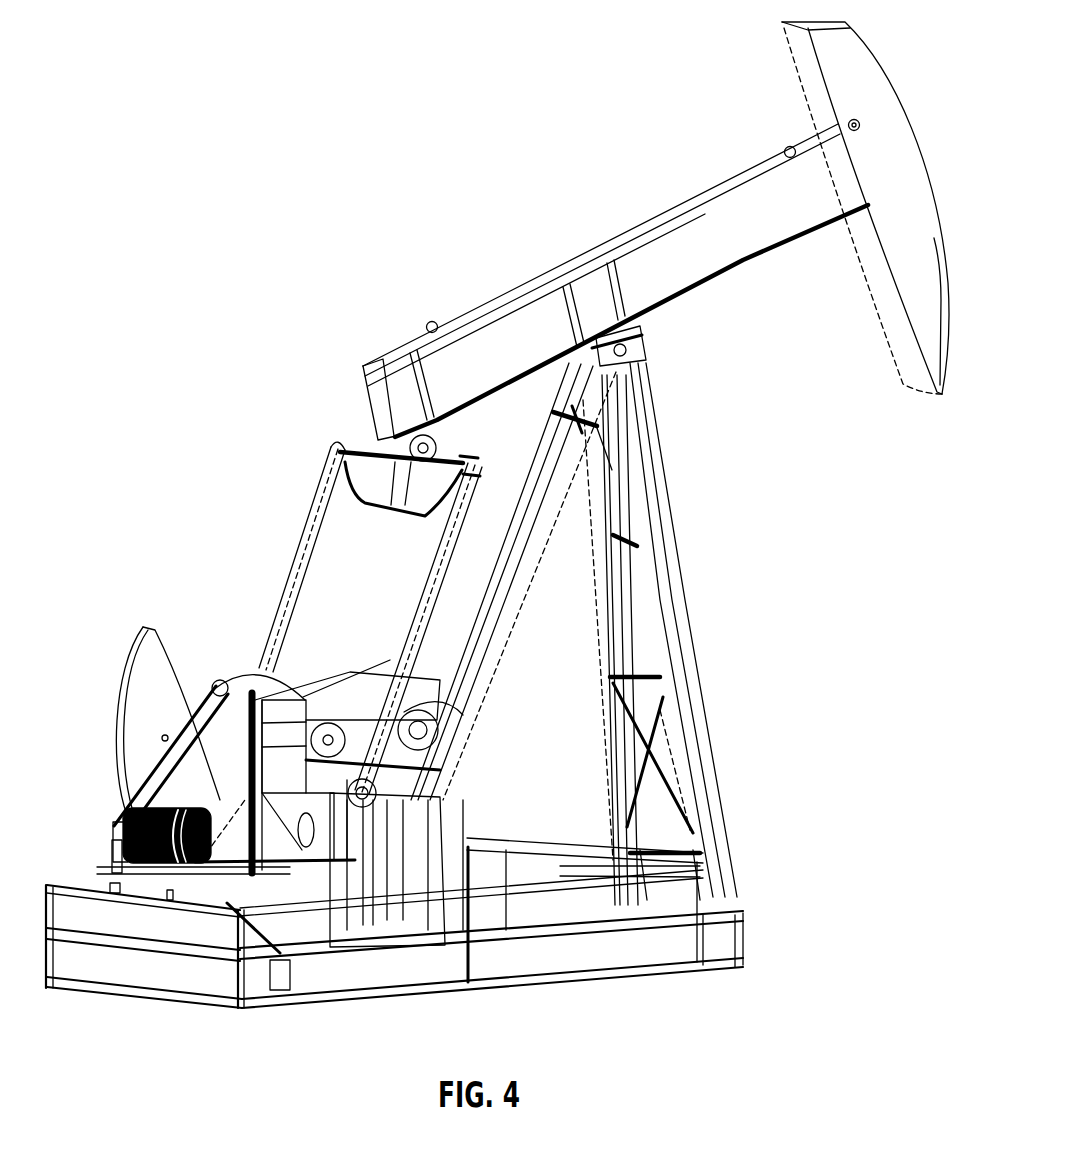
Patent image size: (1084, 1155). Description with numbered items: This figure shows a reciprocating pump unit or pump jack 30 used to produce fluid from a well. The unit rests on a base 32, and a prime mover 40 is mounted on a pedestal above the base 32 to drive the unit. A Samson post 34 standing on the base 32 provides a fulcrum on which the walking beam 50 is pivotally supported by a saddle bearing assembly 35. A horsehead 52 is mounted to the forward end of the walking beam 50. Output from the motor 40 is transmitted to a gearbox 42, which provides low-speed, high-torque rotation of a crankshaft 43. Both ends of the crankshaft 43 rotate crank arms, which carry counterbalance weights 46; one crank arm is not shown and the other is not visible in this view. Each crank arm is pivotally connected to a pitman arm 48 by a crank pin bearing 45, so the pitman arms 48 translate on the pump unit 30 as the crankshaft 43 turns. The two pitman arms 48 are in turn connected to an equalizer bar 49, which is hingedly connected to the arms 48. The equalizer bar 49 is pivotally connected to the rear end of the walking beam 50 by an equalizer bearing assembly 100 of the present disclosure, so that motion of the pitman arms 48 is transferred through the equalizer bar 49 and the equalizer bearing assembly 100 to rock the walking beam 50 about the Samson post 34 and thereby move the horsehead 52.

The pump unit 30 is at (297, 256).
The base 32 is at (628, 985).
The Samson post 34 is at (668, 508).
The saddle bearing assembly 35 is at (636, 346).
The prime mover 40 is at (120, 832).
The gearbox 42 is at (245, 670).
The crankshaft 43 is at (443, 732).
The crank pin bearing 45 is at (380, 808).
The counterbalance weights 46 is at (122, 682).
The pitman arms 48 is at (297, 540).
The equalizer bar 49 is at (383, 512).
The walking beam 50 is at (700, 197).
The horsehead 52 is at (903, 108).
The equalizer bearing assembly 100 is at (446, 444).